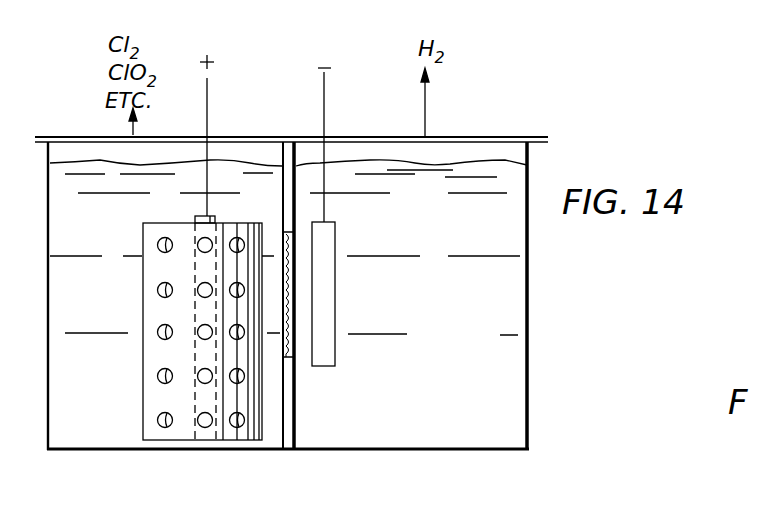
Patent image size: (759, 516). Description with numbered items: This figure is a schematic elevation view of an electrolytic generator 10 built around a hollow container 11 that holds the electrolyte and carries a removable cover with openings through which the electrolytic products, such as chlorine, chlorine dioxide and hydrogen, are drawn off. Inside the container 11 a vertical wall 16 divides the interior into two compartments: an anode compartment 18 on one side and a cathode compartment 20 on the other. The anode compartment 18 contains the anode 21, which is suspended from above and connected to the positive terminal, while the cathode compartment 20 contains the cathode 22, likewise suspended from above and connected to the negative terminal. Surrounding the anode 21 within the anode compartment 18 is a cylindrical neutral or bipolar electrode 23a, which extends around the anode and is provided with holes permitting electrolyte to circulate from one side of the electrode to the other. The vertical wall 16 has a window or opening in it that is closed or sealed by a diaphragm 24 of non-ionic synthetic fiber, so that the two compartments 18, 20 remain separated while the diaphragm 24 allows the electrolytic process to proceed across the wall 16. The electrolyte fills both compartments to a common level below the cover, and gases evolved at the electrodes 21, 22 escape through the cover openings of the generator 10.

The electrolytic generator 10 is at (530, 285).
The hollow container 11 is at (530, 327).
The vertical wall 16 is at (295, 418).
The anode compartment 18 is at (80, 437).
The cathode compartment 20 is at (464, 443).
The anode 21 is at (193, 216).
The cathode 22 is at (335, 302).
The anode assembly 23a is at (143, 297).
The diaphragm 24 is at (293, 358).